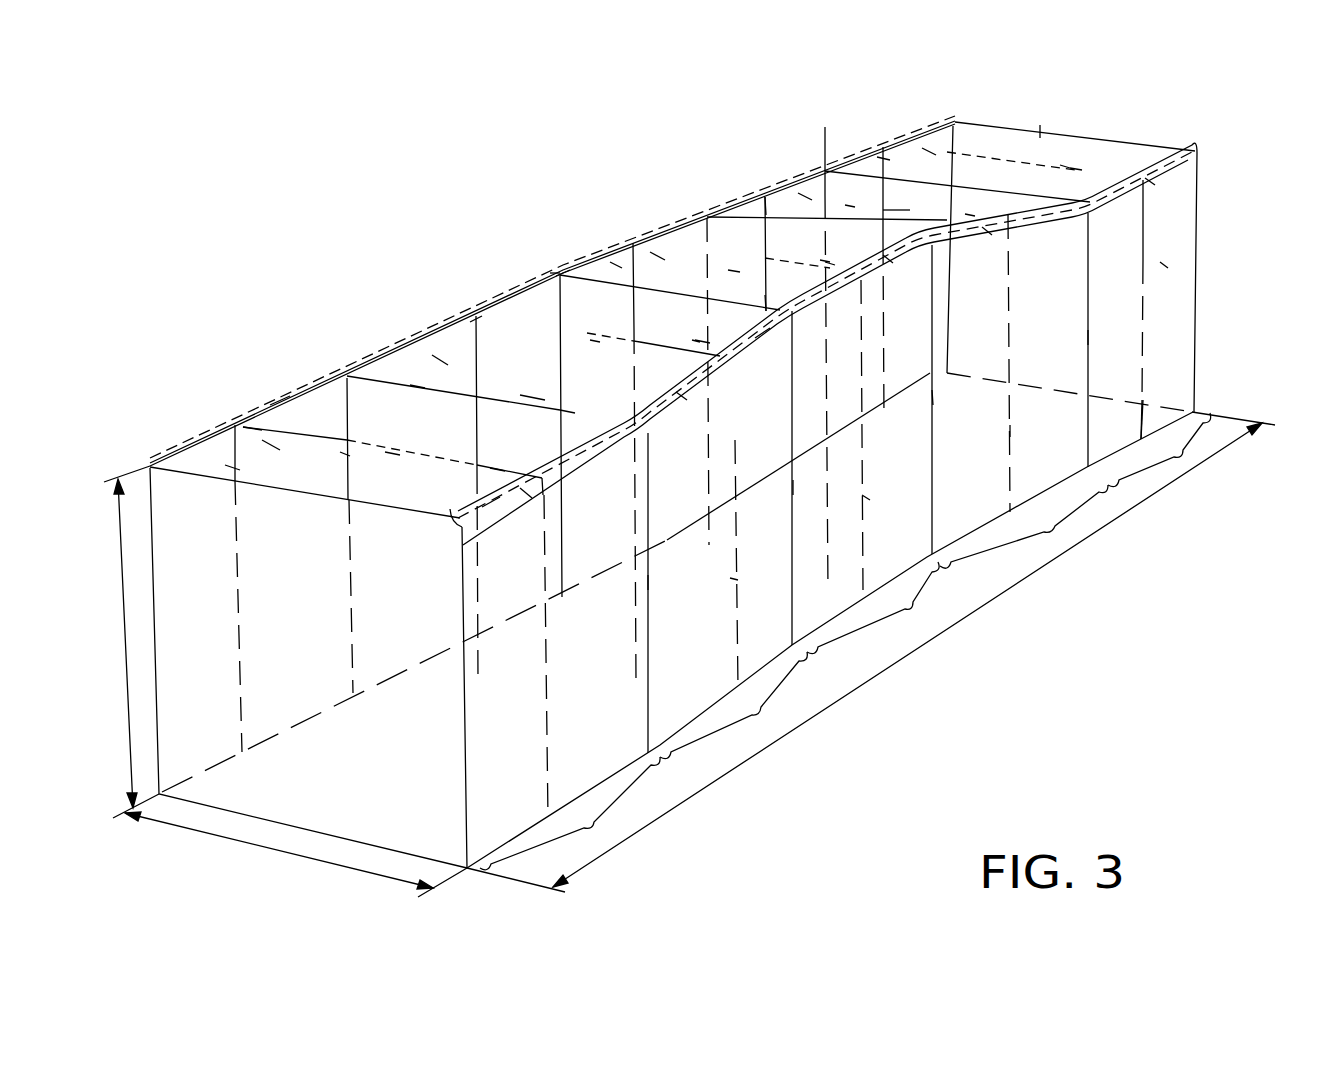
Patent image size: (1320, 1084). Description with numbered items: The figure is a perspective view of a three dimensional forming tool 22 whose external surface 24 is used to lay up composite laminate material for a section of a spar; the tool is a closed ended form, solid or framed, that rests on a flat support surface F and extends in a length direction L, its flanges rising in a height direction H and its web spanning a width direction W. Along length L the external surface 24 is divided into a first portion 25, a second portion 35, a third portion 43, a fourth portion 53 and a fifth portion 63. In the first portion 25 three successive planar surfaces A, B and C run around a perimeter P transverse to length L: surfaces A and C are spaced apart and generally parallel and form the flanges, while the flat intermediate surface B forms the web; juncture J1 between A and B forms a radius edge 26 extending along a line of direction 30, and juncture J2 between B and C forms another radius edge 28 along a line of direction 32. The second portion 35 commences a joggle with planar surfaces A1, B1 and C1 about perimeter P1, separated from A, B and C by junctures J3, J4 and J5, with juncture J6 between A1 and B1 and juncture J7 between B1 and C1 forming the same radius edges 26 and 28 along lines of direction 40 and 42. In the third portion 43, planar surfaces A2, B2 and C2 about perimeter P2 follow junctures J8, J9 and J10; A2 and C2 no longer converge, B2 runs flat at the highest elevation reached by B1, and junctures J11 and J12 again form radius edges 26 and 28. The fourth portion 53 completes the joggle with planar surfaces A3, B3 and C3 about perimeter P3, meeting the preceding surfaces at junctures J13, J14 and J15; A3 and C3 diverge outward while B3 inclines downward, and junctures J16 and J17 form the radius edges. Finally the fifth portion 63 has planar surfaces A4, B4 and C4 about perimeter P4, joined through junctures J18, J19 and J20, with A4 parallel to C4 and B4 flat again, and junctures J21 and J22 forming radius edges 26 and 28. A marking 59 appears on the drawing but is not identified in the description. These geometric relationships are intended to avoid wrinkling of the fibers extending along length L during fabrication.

The three dimensional forming tool 22 is at (556, 205).
The external surface 24 is at (225, 462).
The first portion 25 is at (594, 826).
The radius edge 26 is at (455, 535).
The other radius edge 28 is at (152, 472).
The line of direction 30 is at (488, 515).
The line of direction 32 is at (280, 398).
The second portion 35 is at (761, 712).
The line of direction 40 is at (762, 345).
The line of direction 42 is at (472, 325).
The third portion 43 is at (913, 607).
The fourth portion 53 is at (1052, 532).
The bend 59 is at (560, 268).
The fifth portion 63 is at (1183, 455).
The height direction H is at (126, 660).
The width direction W is at (293, 853).
The length direction L is at (918, 650).
The flat support surface F is at (197, 867).
The planar surface A is at (574, 704).
The planar surface A1 is at (746, 549).
The planar surface A2 is at (874, 462).
The planar surface A3 is at (1031, 374).
The planar surface A4 is at (1161, 332).
The intermediate planar surface B is at (390, 455).
The planar surface B1 is at (595, 345).
The planar surface B2 is at (728, 280).
The planar surface B3 is at (846, 228).
The planar surface B4 is at (1038, 128).
The planar surface C is at (262, 438).
The planar surface C1 is at (430, 352).
The planar surface C2 is at (648, 250).
The planar surface C3 is at (785, 205).
The planar surface C4 is at (915, 150).
The perimeter P is at (492, 462).
The perimeter P1 is at (690, 340).
The perimeter P2 is at (830, 263).
The perimeter P3 is at (972, 214).
The perimeter P4 is at (1078, 168).
The juncture J1 is at (545, 508).
The juncture J2 is at (262, 415).
The juncture J3 is at (648, 580).
The juncture J4 is at (570, 410).
The juncture J5 is at (345, 455).
The juncture J6 is at (700, 410).
The juncture J7 is at (405, 382).
The juncture J8 is at (795, 498).
The juncture J9 is at (766, 298).
The juncture J10 is at (540, 397).
The juncture J11 is at (905, 272).
The juncture J12 is at (598, 258).
The juncture J13 is at (933, 412).
The juncture J14 is at (883, 232).
The juncture J15 is at (698, 335).
The juncture J16 is at (1005, 245).
The juncture J17 is at (752, 195).
The juncture J18 is at (1088, 332).
The juncture J19 is at (1050, 168).
The juncture J20 is at (825, 250).
The juncture J21 is at (1170, 195).
The juncture J22 is at (877, 157).